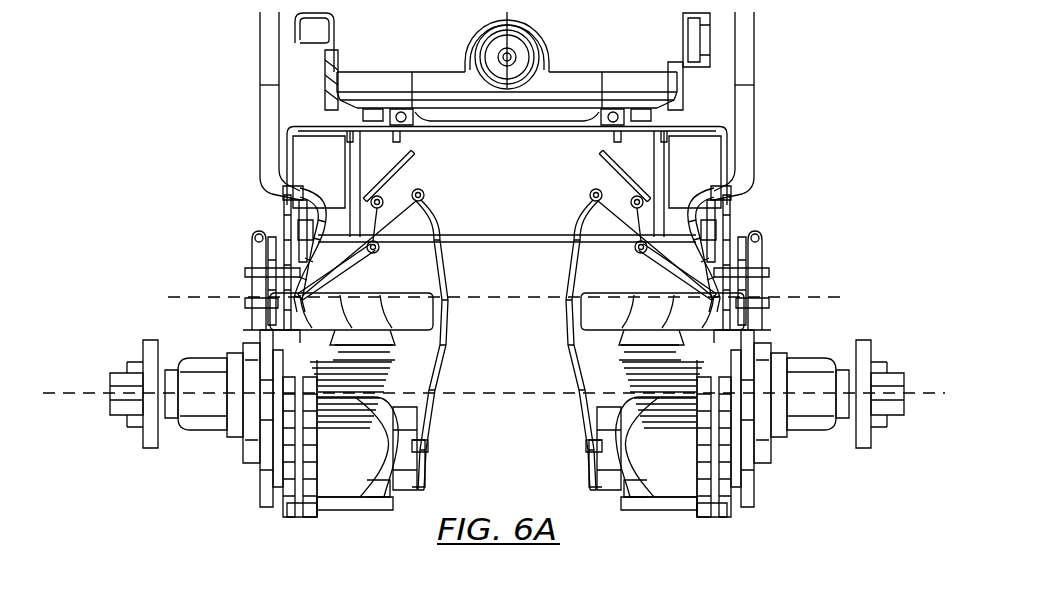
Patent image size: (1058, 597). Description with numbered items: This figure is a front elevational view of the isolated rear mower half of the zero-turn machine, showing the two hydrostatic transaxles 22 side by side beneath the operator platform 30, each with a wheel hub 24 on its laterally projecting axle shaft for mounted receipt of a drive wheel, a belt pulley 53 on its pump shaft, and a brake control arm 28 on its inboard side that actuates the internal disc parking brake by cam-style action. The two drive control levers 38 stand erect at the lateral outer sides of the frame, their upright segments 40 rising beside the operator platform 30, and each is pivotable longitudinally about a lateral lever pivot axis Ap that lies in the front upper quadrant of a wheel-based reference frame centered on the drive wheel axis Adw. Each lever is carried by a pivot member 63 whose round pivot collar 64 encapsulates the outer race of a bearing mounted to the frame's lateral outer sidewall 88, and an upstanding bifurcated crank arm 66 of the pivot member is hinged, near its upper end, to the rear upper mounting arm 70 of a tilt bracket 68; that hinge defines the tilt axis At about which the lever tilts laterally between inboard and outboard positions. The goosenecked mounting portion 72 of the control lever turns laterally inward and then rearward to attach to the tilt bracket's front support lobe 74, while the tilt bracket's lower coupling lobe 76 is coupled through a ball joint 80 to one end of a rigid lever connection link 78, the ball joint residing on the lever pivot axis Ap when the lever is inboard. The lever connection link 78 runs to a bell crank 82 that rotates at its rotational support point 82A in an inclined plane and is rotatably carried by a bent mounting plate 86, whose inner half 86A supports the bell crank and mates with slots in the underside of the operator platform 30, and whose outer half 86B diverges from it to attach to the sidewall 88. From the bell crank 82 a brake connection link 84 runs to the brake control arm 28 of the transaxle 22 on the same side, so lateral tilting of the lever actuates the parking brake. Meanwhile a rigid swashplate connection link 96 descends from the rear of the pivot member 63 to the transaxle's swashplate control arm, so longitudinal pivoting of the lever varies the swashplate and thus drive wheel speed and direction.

The hydrostatic transaxle 22 is at (348, 480).
The wheel hub 24 is at (150, 443).
The brake control arm 28 is at (428, 465).
The operator platform 30 is at (660, 133).
The drive control lever 38 is at (250, 56).
The upright segment 40 is at (268, 68).
The belt pulley 53 is at (397, 353).
The pivot member 63 is at (252, 315).
The pivot collar 64 is at (258, 304).
The crank arm 66 is at (258, 258).
The tilt bracket 68 is at (280, 273).
The rear upper mounting arm 70 is at (272, 232).
The goosenecked mounting portion 72 is at (293, 188).
The front support lobe 74 is at (305, 232).
The lower coupling lobe 76 is at (303, 288).
The lever connection link 78 is at (343, 268).
The ball joint 80 is at (263, 333).
The bell crank 82 is at (417, 172).
The rotational support point 82A is at (507, 251).
The brake connection link 84 is at (448, 270).
The mounting plate 86 is at (507, 175).
The inner half 86A is at (427, 193).
The outer half 86B is at (320, 145).
The lateral outer sidewall 88 is at (287, 155).
The swashplate connection link 96 is at (320, 398).
The tilt axis At is at (253, 236).
The lever pivot axis Ap is at (808, 290).
The drive wheel axis Adw is at (60, 380).